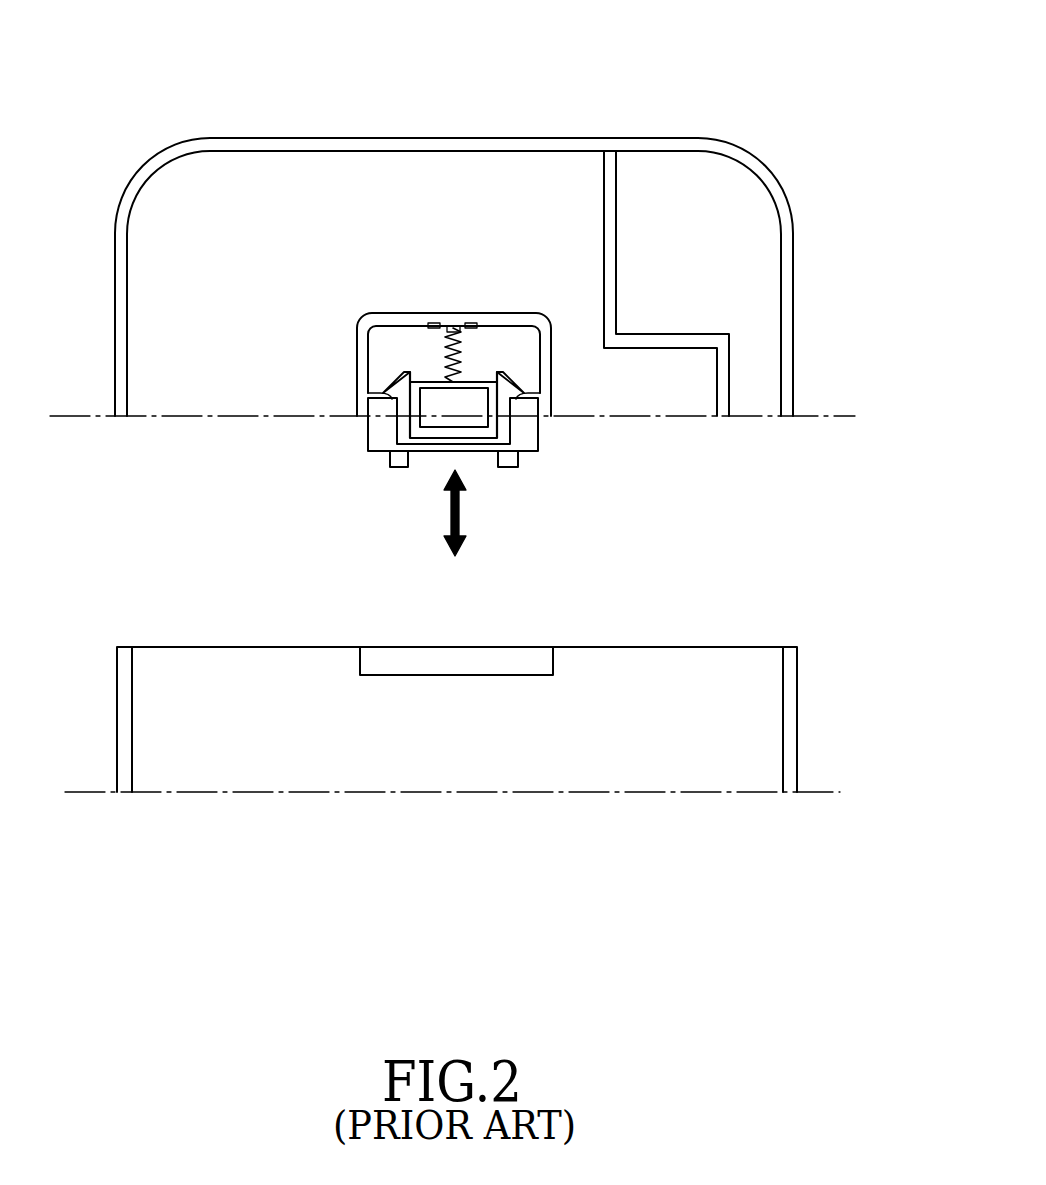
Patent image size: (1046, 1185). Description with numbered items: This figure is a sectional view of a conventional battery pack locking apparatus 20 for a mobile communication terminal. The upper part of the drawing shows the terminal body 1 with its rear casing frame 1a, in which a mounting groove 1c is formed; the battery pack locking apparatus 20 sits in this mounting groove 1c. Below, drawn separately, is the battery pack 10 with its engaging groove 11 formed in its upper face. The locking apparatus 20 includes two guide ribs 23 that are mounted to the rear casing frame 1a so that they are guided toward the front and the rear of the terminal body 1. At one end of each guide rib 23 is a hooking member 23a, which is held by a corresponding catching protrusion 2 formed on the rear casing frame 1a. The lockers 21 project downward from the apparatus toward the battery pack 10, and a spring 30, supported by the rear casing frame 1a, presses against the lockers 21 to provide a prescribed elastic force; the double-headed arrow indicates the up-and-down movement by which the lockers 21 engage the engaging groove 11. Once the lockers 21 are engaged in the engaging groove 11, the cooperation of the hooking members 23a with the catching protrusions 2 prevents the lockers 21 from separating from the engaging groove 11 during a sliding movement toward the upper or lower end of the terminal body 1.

The terminal body 1 is at (823, 289).
The rear casing frame 1a is at (611, 148).
The mounting groove 1c is at (405, 341).
The catching protrusion 2 is at (531, 402).
The battery pack 10 is at (829, 706).
The engaging groove 11 is at (467, 676).
The battery pack locking apparatus 20 is at (372, 451).
The lockers 21 is at (403, 467).
The guide ribs 23 is at (405, 422).
The hooking member 23a is at (517, 380).
The spring 30 is at (468, 342).